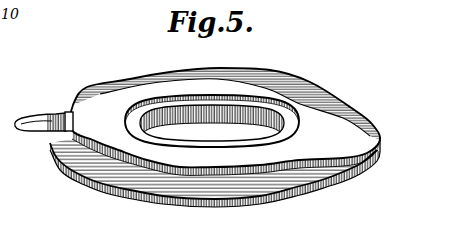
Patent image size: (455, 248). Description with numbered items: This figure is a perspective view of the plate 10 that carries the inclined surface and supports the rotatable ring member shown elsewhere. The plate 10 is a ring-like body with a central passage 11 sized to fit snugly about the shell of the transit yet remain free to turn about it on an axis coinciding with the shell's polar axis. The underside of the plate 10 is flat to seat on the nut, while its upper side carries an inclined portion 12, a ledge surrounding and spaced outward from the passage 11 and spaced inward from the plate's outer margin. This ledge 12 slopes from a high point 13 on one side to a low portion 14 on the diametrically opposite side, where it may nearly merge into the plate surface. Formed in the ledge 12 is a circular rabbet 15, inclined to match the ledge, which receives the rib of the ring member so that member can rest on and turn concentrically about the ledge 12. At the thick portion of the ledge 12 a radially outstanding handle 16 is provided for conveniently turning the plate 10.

The plate 10 is at (178, 191).
The central passage 11 is at (212, 123).
The inclined portion 12 is at (168, 82).
The high point 13 is at (78, 108).
The low portion 14 is at (346, 131).
The circular rabbet 15 is at (232, 100).
The handle 16 is at (36, 124).